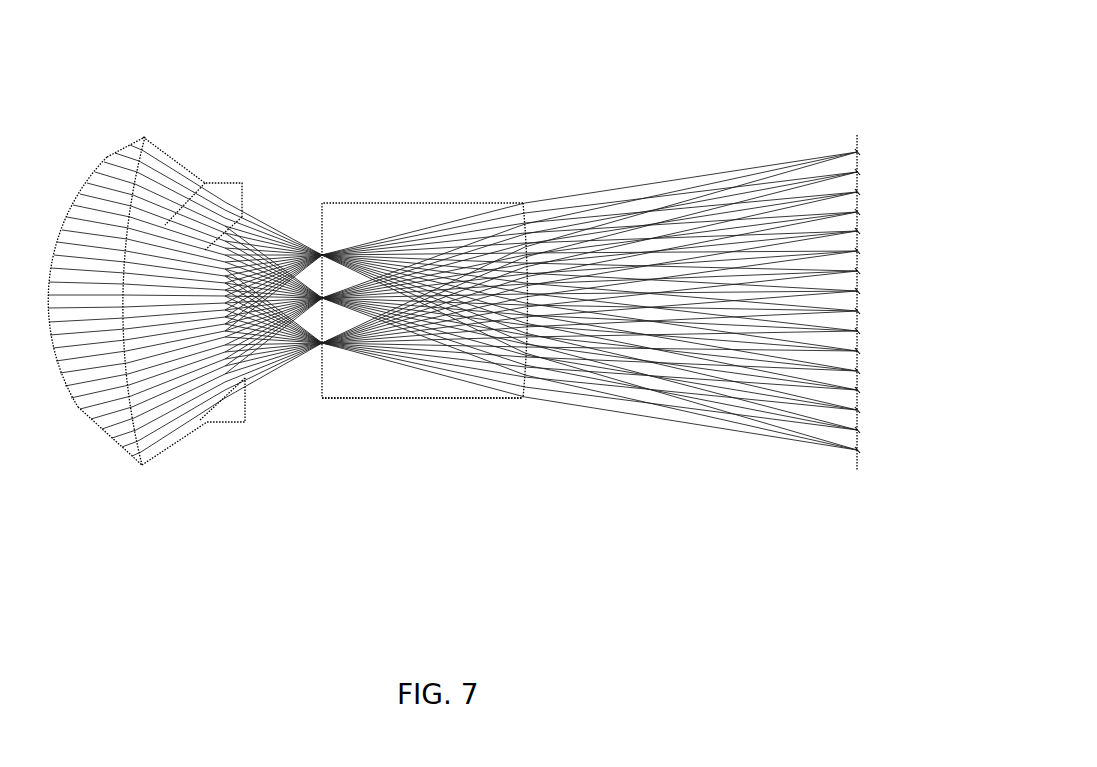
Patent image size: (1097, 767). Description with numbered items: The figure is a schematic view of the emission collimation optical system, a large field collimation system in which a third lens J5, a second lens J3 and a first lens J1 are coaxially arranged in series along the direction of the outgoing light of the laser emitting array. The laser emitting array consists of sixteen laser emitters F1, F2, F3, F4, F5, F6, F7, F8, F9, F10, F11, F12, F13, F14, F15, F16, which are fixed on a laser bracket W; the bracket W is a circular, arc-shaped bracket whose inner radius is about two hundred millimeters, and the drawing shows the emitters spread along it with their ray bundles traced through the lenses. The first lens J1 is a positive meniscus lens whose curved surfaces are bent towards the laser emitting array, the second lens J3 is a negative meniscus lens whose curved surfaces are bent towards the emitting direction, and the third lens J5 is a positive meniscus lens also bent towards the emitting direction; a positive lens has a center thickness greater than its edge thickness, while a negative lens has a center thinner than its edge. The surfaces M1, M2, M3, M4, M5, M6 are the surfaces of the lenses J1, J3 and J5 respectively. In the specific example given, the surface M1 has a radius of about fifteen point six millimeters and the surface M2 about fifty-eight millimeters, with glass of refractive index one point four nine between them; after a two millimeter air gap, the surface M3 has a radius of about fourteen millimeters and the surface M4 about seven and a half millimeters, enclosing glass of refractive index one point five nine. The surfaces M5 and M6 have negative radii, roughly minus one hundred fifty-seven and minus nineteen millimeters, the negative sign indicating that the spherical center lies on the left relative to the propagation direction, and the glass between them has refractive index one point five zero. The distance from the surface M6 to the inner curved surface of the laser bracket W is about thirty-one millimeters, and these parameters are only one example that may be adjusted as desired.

The surface M1 is at (107, 157).
The surface M2 is at (145, 138).
The surface M3 is at (193, 185).
The surface M4 is at (237, 220).
The surface M5 is at (322, 223).
The surface M6 is at (523, 208).
The first lens J1 is at (133, 452).
The second lens J3 is at (230, 413).
The third lens J5 is at (410, 396).
The laser bracket W is at (857, 133).
The laser emitter F1 is at (858, 152).
The laser emitter F2 is at (858, 172).
The laser emitter F3 is at (858, 192).
The laser emitter F4 is at (858, 212).
The laser emitter F5 is at (858, 231).
The laser emitter F6 is at (858, 251).
The laser emitter F7 is at (858, 271).
The laser emitter F8 is at (858, 291).
The laser emitter F9 is at (858, 311).
The laser emitter F10 is at (858, 331).
The laser emitter F11 is at (858, 351).
The laser emitter F12 is at (858, 371).
The laser emitter F13 is at (858, 390).
The laser emitter F14 is at (858, 410).
The laser emitter F15 is at (858, 430).
The laser emitter F16 is at (858, 450).